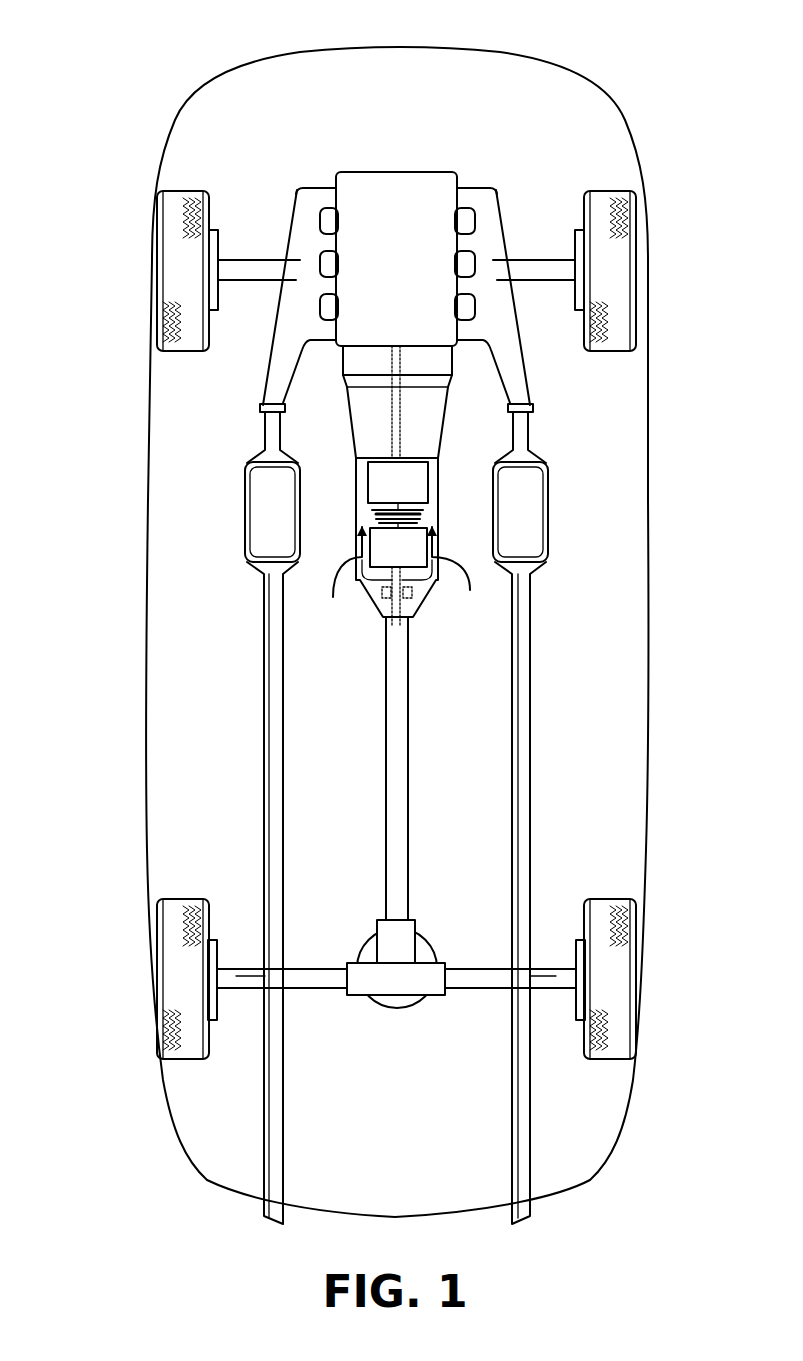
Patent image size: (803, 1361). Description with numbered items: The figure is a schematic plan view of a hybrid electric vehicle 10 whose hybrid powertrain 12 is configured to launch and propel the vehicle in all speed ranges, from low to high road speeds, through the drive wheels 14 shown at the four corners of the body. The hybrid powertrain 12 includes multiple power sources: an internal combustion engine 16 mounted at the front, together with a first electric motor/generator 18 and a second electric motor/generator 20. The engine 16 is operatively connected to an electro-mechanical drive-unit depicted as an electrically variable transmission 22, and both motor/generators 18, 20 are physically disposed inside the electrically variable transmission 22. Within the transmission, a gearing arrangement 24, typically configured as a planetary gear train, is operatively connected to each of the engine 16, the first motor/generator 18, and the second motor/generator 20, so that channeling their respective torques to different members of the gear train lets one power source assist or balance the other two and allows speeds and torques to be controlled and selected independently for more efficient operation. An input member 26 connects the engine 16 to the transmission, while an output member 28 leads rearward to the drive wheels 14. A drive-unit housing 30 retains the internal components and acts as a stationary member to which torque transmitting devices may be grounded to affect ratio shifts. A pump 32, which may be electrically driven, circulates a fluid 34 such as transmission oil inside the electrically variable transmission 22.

The vehicle 10 is at (222, 44).
The hybrid powertrain 12 is at (334, 496).
The drive wheels 14 is at (177, 268).
The internal combustion engine 16 is at (397, 259).
The first electric motor/generator 18 is at (398, 482).
The second electric motor/generator 20 is at (398, 547).
The electrically variable transmission 22 is at (449, 437).
The gearing arrangement 24 is at (425, 512).
The input member 26 is at (400, 357).
The output member 28 is at (418, 622).
The drive-unit housing 30 is at (353, 468).
The pump 32 is at (382, 605).
The fluid 34 is at (403, 574).